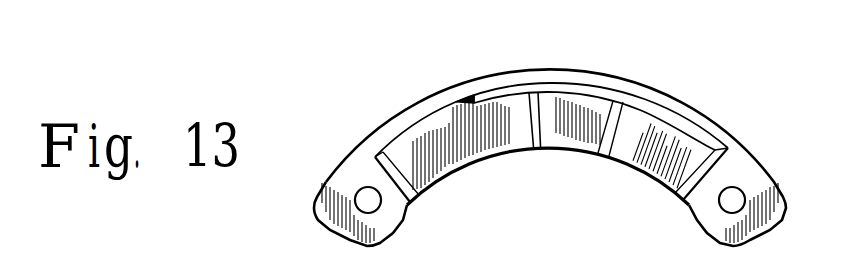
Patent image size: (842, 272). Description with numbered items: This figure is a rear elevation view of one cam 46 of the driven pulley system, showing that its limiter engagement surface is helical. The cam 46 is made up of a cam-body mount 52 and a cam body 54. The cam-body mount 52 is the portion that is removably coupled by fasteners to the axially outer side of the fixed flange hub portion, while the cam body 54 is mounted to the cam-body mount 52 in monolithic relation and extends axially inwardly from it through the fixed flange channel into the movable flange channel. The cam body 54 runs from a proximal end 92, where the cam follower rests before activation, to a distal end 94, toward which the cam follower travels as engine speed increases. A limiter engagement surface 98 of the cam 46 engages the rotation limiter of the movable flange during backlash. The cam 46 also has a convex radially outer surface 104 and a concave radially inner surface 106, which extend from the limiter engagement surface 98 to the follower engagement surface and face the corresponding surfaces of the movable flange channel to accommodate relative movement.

The cam 46 is at (341, 83).
The cam-body mount 52 is at (706, 202).
The cam body 54 is at (675, 118).
The proximal end 92 is at (608, 80).
The distal end 94 is at (472, 157).
The limiter engagement surface 98 is at (593, 153).
The convex radially outer surface 104 is at (528, 88).
The concave radially inner surface 106 is at (590, 152).